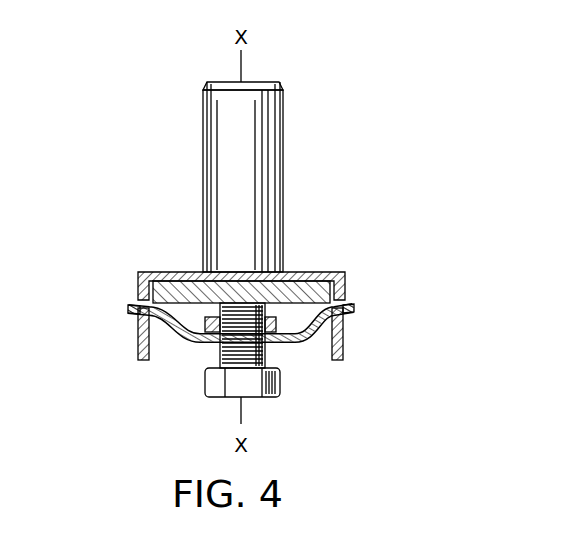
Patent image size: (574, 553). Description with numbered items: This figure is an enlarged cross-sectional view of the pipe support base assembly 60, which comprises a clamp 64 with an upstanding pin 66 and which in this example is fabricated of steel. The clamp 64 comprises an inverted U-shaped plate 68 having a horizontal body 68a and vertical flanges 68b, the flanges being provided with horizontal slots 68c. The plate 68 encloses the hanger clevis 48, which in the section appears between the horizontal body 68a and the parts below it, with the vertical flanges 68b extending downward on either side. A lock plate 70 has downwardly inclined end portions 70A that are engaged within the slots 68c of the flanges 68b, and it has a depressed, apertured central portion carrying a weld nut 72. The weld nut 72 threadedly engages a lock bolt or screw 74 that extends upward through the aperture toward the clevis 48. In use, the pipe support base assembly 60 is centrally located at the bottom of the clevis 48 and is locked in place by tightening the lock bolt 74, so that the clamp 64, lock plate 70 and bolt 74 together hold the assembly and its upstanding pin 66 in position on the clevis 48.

The hanger clevis 48 is at (200, 272).
The pipe support base assembly 60 is at (305, 192).
The clamp 64 is at (346, 268).
The upstanding pin 66 is at (257, 186).
The inverted U-shaped plate 68 is at (131, 290).
The horizontal body 68a is at (320, 272).
The vertical flanges 68b is at (136, 336).
The horizontal slots 68c is at (137, 300).
The lock plate 70 is at (181, 340).
The downwardly inclined end portions 70A is at (130, 312).
The weld nut 72 is at (300, 344).
The lock bolt 74 is at (282, 386).